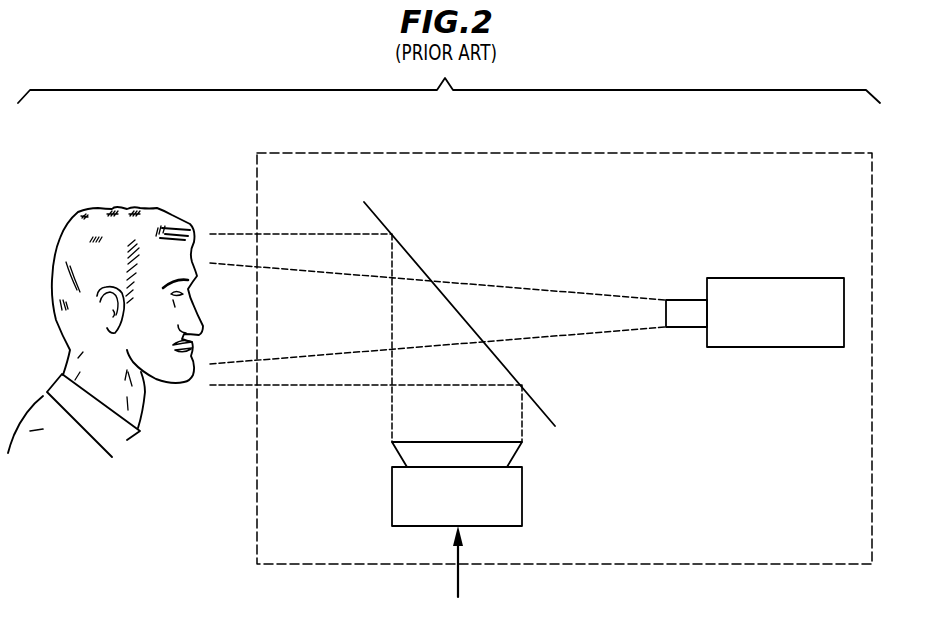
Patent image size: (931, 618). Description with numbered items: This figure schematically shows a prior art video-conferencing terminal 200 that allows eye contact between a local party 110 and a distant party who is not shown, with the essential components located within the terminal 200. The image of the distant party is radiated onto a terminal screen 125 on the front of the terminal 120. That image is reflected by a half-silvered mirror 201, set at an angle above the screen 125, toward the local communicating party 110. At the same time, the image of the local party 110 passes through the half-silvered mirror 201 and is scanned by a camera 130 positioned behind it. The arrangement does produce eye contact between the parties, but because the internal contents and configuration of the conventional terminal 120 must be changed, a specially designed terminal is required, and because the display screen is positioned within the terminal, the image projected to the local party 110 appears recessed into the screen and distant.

The local party 110 is at (93, 194).
The video-conferencing terminal 200 is at (630, 150).
The half-silvered mirror 201 is at (383, 223).
The camera 130 is at (800, 278).
The terminal screen 125 is at (400, 456).
The terminal 120 is at (522, 497).